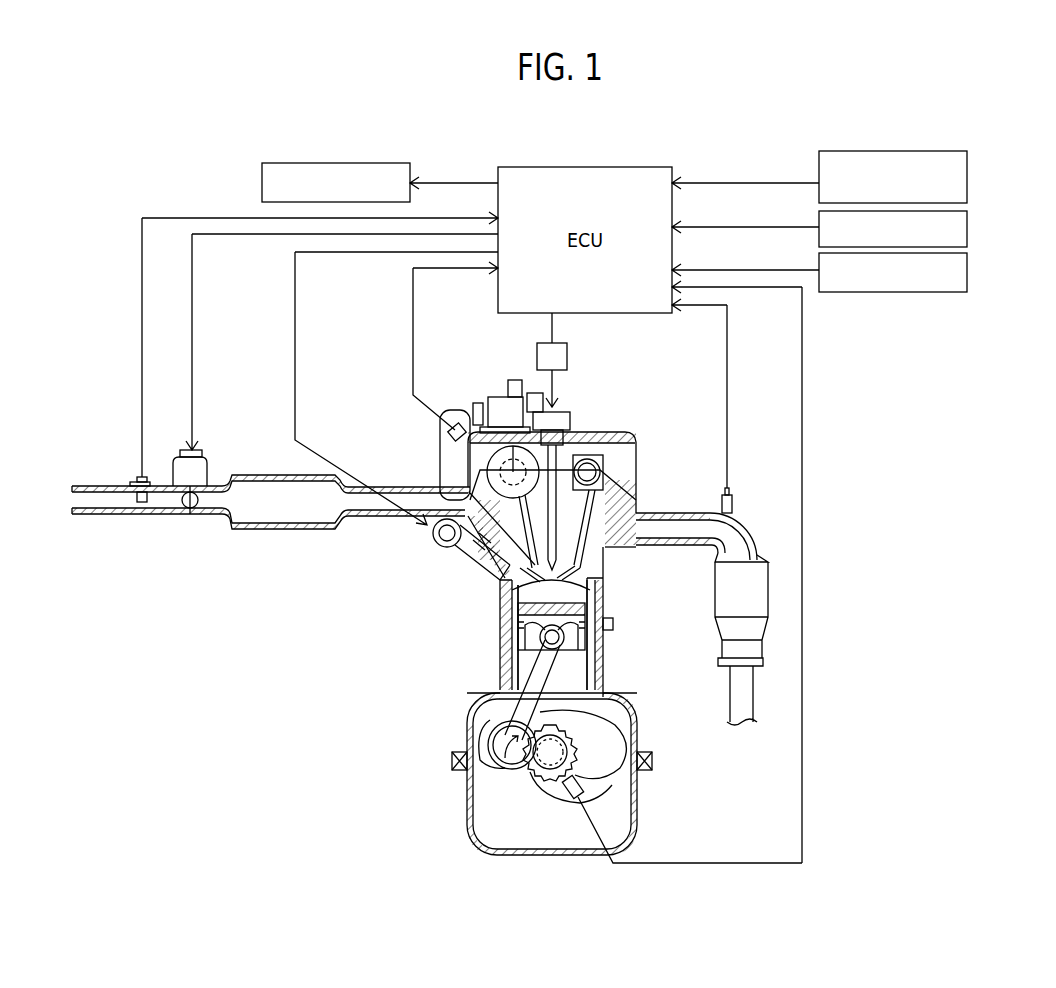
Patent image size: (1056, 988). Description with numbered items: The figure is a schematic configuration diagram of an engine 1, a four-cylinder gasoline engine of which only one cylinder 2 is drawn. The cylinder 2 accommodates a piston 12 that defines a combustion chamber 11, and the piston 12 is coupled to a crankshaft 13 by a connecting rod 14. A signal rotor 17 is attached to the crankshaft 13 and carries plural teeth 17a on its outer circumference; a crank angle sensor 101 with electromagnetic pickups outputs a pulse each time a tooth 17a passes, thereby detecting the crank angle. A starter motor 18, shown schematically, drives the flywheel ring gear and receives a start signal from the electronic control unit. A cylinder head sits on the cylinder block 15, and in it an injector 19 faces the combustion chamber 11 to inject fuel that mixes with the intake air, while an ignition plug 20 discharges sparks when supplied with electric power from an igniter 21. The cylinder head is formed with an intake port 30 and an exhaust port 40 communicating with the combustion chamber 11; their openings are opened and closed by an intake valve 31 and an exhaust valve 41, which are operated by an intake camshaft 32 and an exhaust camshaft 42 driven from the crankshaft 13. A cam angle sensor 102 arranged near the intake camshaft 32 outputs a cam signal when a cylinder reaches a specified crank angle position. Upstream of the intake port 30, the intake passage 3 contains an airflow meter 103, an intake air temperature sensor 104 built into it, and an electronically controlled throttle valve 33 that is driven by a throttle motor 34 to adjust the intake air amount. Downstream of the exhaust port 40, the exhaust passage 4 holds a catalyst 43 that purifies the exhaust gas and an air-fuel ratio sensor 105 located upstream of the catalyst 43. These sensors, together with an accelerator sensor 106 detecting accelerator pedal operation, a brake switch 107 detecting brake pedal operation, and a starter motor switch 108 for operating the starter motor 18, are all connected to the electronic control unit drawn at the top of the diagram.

The engine 1 is at (354, 686).
The cylinder 2 is at (607, 680).
The intake passage 3 is at (370, 503).
The exhaust passage 4 is at (663, 530).
The combustion chamber 11 is at (607, 595).
The piston 12 is at (525, 640).
The crankshaft 13 is at (492, 848).
The connecting rod 14 is at (538, 678).
The cylinder block 15 is at (607, 630).
The signal rotor 17 is at (533, 775).
The teeth 17a is at (587, 740).
The starter motor 18 is at (262, 181).
The injector 19 is at (463, 560).
The ignition plug 20 is at (547, 580).
The igniter 21 is at (567, 356).
The intake port 30 is at (482, 500).
The intake valve 31 is at (490, 593).
The intake camshaft 32 is at (500, 430).
The throttle valve 33 is at (198, 502).
The throttle motor 34 is at (205, 468).
The exhaust port 40 is at (603, 527).
The exhaust valve 41 is at (600, 545).
The exhaust camshaft 42 is at (590, 470).
The catalyst 43 is at (718, 595).
The crank angle sensor 101 is at (588, 787).
The cam angle sensor 102 is at (453, 425).
The airflow meter 103 is at (132, 480).
The intake air temperature sensor 104 is at (152, 496).
The air-fuel ratio sensor 105 is at (735, 500).
The accelerator sensor 106 is at (967, 183).
The brake switch 107 is at (967, 227).
The starter motor switch 108 is at (967, 270).